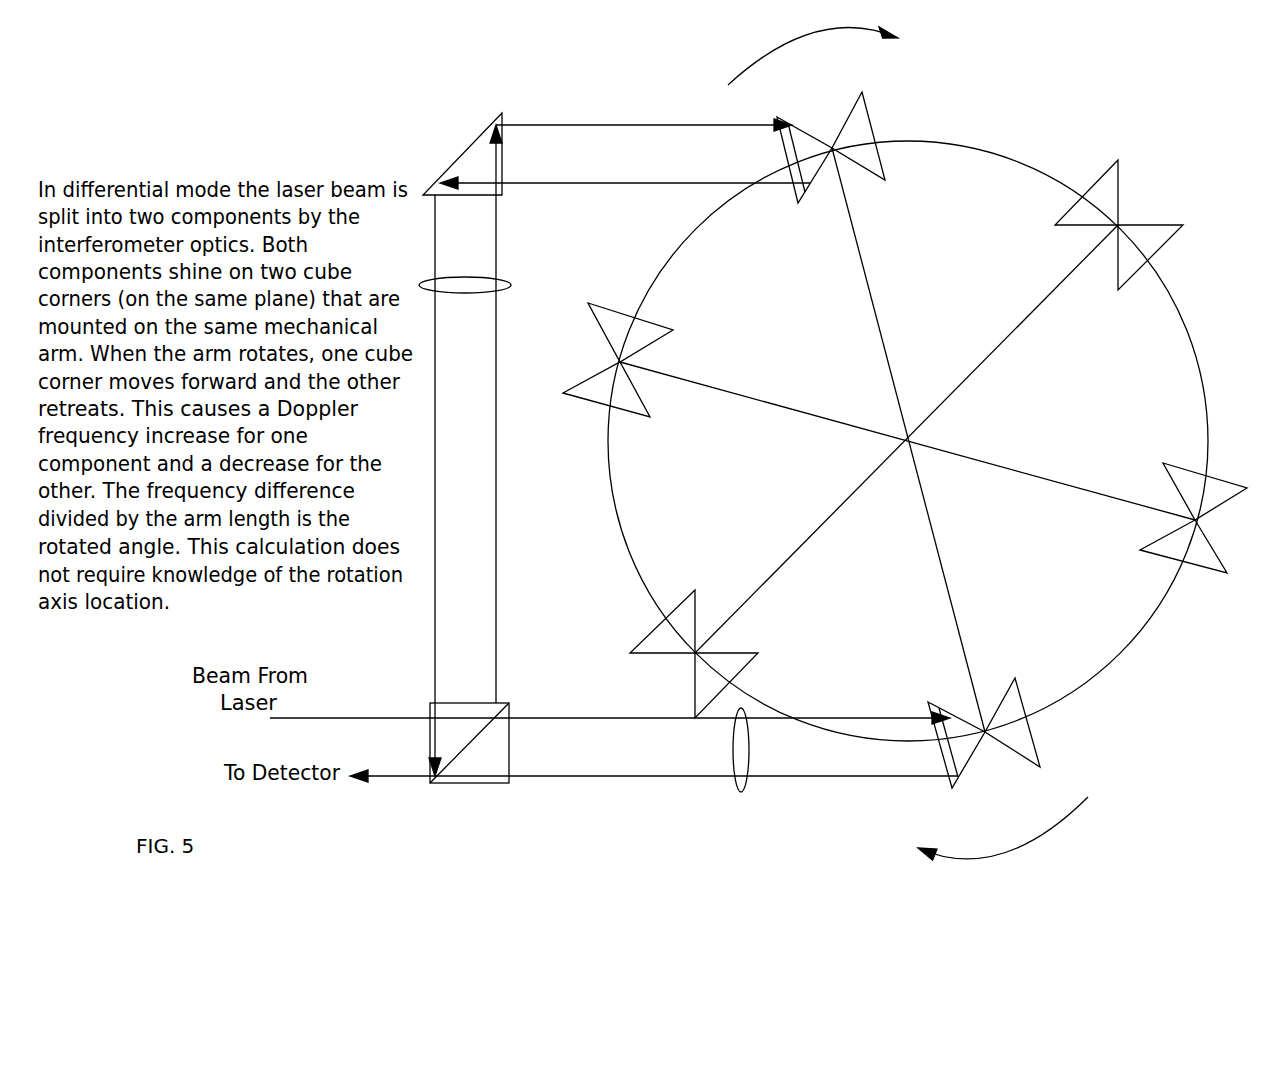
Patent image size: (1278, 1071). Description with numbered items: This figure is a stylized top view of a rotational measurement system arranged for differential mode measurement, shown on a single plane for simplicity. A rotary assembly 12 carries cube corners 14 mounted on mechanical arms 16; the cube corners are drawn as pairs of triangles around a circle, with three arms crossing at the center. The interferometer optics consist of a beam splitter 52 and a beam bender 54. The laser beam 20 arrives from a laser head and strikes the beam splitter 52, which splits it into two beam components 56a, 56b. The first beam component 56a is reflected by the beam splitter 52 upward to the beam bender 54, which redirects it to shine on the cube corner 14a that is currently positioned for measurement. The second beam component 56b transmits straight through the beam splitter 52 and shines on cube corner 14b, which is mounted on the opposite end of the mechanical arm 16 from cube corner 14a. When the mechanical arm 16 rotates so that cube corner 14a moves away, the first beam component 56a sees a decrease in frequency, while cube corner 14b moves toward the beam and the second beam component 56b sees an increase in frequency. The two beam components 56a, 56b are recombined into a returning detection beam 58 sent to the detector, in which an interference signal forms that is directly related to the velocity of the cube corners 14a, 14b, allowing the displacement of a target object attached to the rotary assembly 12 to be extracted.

The rotary assembly 12 is at (914, 443).
The cube corners 14 is at (905, 400).
The cube corner 14a is at (803, 169).
The cube corner 14b is at (956, 757).
The mechanical arm 16 is at (907, 440).
The laser beam 20 is at (610, 690).
The beam splitter 52 is at (509, 766).
The beam bender 54 is at (443, 154).
The first beam component 56a is at (510, 273).
The second beam component 56b is at (702, 772).
The returning detection beam 58 is at (654, 810).